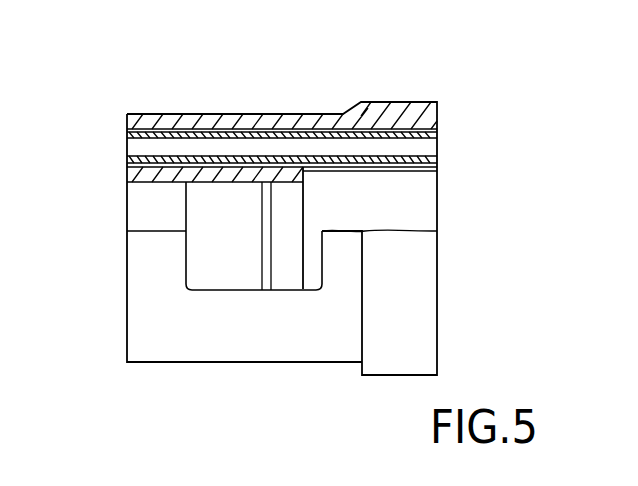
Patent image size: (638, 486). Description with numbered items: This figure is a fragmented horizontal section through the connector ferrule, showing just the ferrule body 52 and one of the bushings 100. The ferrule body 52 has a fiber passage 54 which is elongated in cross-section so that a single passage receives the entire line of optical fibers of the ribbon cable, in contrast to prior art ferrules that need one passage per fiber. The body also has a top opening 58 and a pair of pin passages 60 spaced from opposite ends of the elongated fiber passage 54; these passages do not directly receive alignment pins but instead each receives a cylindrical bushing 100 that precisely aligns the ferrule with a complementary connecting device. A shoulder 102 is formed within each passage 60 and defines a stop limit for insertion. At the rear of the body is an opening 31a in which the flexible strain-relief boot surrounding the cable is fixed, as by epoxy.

The opening 31a is at (413, 172).
The ferrule body 52 is at (250, 113).
The bushing 100 is at (207, 113).
The pin passage 60 is at (153, 152).
The fiber passage 54 is at (147, 183).
The shoulder 102 is at (303, 167).
The top opening 58 is at (226, 289).